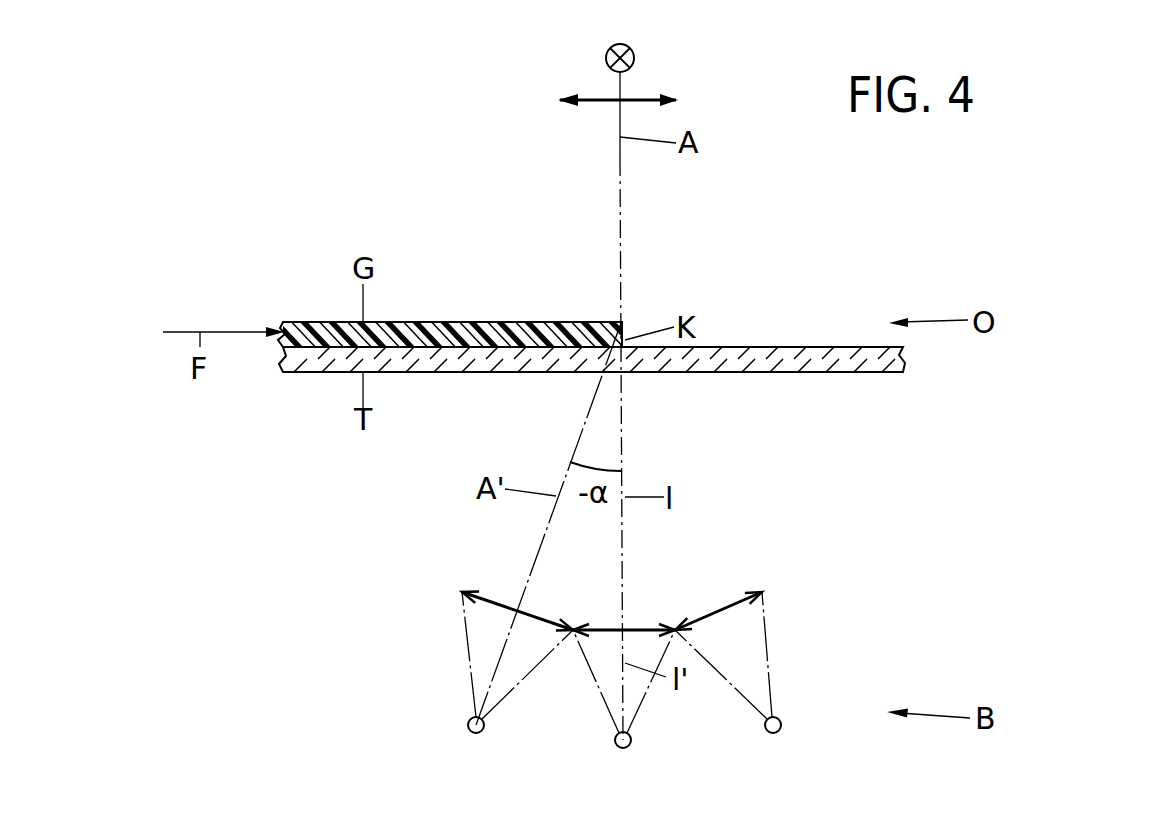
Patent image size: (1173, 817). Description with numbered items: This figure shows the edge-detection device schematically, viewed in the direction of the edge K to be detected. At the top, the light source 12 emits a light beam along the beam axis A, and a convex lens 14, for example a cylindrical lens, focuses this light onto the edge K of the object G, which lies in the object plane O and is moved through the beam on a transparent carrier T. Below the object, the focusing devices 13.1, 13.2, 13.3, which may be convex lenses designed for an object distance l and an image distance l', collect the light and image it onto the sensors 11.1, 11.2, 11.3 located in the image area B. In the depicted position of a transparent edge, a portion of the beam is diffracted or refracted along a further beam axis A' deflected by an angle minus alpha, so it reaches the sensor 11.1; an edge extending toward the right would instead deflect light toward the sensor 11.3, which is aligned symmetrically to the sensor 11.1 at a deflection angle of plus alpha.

The light source 12 is at (631, 52).
The convex lens 14 is at (645, 79).
The focusing device 13.1 is at (505, 603).
The focusing device 13.2 is at (641, 627).
The focusing device 13.3 is at (712, 607).
The sensor 11.1 is at (470, 731).
The sensor 11.2 is at (614, 742).
The sensor 11.3 is at (767, 731).